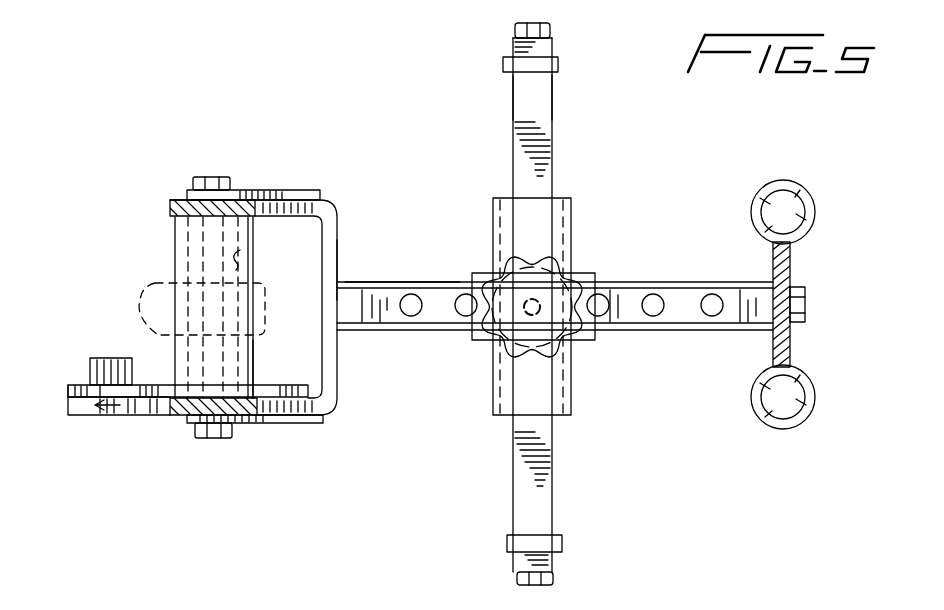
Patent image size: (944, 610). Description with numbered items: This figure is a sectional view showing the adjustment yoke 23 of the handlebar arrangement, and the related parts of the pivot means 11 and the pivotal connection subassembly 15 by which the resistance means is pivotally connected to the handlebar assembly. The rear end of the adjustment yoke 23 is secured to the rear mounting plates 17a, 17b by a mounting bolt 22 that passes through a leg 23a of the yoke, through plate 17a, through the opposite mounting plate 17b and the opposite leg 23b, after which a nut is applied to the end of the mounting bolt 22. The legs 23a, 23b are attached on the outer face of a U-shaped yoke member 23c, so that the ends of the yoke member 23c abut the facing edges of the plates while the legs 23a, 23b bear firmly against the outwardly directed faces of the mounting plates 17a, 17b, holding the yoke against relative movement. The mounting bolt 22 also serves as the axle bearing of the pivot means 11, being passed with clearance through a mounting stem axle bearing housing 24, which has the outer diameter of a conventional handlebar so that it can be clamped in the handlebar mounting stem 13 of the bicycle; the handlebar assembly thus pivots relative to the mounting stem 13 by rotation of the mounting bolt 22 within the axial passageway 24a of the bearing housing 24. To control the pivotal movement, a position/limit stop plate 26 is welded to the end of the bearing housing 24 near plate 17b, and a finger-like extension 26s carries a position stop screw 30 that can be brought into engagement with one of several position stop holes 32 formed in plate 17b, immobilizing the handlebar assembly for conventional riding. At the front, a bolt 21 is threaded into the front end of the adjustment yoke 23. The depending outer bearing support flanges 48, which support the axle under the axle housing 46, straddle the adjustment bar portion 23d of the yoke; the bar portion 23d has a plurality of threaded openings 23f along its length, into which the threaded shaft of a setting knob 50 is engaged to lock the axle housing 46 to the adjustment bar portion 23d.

The pivot means 11 is at (170, 257).
The handlebar mounting stem 13 is at (150, 287).
The pivotal connection subassembly 15 is at (552, 133).
The rear mounting plate 17a is at (178, 200).
The rear mounting plate 17b is at (168, 416).
The bolt 21 is at (805, 310).
The mounting bolt 22 is at (212, 177).
The adjustment yoke 23 is at (694, 278).
The leg 23a is at (292, 190).
The leg 23b is at (316, 424).
The U-shaped yoke member 23c is at (337, 236).
The adjustment bar portion 23d is at (432, 281).
The threaded openings 23f is at (712, 317).
The mounting stem axle bearing housing 24 is at (253, 363).
The axial passageway 24a is at (240, 250).
The position/limit stop plate 26 is at (289, 386).
The finger-like extension 26s is at (75, 385).
The position stop screw 30 is at (112, 357).
The position stop holes 32 is at (92, 418).
The axle housing 46 is at (520, 90).
The outer bearing support flanges 48 is at (572, 225).
The setting knob 50 is at (530, 358).